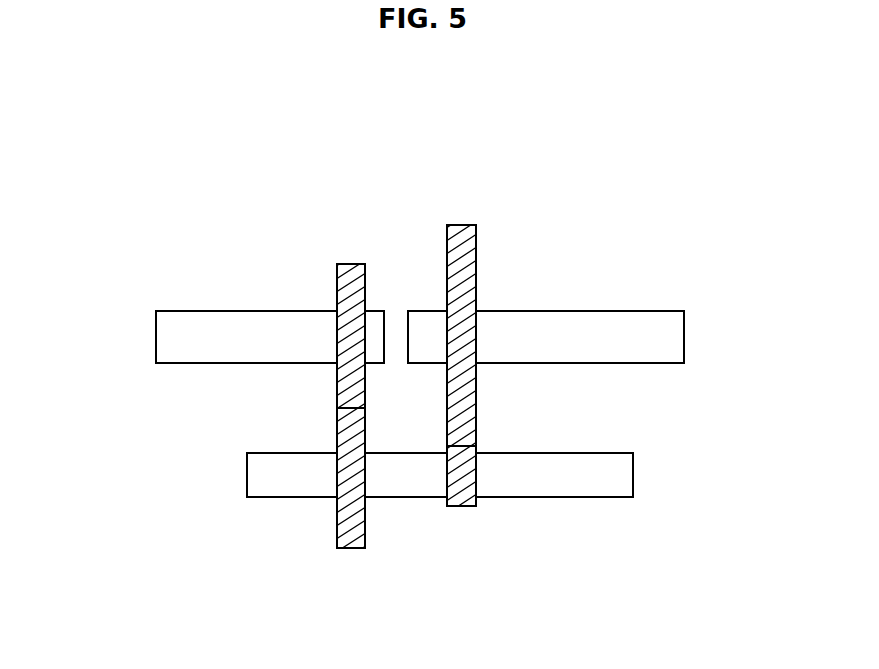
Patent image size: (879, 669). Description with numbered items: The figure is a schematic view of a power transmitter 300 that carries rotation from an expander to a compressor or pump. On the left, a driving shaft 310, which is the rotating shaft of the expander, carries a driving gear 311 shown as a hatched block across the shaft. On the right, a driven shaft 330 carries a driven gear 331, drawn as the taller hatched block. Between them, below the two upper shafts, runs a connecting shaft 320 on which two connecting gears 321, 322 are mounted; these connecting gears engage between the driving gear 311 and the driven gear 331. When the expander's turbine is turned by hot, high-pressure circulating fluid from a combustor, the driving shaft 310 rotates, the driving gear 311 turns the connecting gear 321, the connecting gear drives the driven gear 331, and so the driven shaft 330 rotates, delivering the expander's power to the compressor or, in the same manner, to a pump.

The power transmitter 300 is at (420, 136).
The driving shaft 310 is at (156, 336).
The driving gear 311 is at (345, 264).
The connecting shaft 320 is at (633, 472).
The connecting gear 321 is at (353, 549).
The connecting gear 322 is at (465, 507).
The driven shaft 330 is at (684, 336).
The driven gear 331 is at (462, 225).